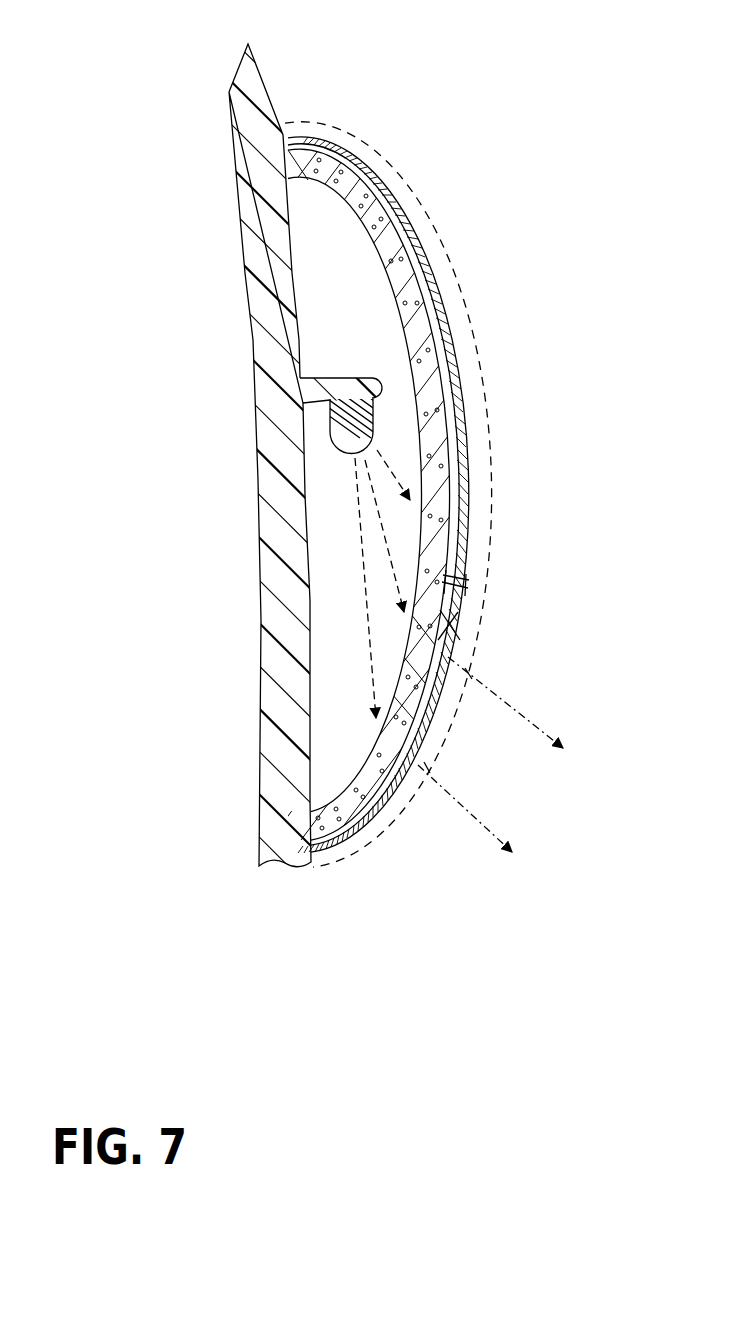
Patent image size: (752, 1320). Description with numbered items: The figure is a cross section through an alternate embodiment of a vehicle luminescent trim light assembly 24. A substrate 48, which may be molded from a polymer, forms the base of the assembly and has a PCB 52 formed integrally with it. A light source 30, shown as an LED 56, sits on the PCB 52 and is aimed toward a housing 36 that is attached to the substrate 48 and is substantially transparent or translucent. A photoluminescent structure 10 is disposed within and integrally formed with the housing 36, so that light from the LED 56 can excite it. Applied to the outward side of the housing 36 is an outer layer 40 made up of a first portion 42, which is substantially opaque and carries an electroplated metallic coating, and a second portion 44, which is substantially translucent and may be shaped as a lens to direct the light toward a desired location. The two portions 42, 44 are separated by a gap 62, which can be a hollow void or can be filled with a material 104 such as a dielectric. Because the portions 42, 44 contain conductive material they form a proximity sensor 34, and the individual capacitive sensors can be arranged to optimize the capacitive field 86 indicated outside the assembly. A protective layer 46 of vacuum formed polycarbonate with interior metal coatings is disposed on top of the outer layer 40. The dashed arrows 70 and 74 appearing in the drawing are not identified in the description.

The trim light assembly 24 is at (336, 106).
The capacitive field 86 is at (385, 157).
The housing 36 is at (400, 207).
The photoluminescent structure 10 is at (413, 273).
The substrate 48 is at (267, 263).
The PCB 52 is at (342, 387).
The first portion 42 is at (438, 362).
The LED 56 is at (340, 428).
The outer layer 40 is at (462, 447).
The proximity sensor 34 is at (477, 491).
The light source 30 is at (328, 460).
The protective layer 46 is at (463, 530).
The material 104 is at (470, 580).
The air flow 70 is at (363, 578).
The gap 62 is at (460, 583).
The second portion 44 is at (382, 815).
The exhaust flow 74 is at (447, 793).